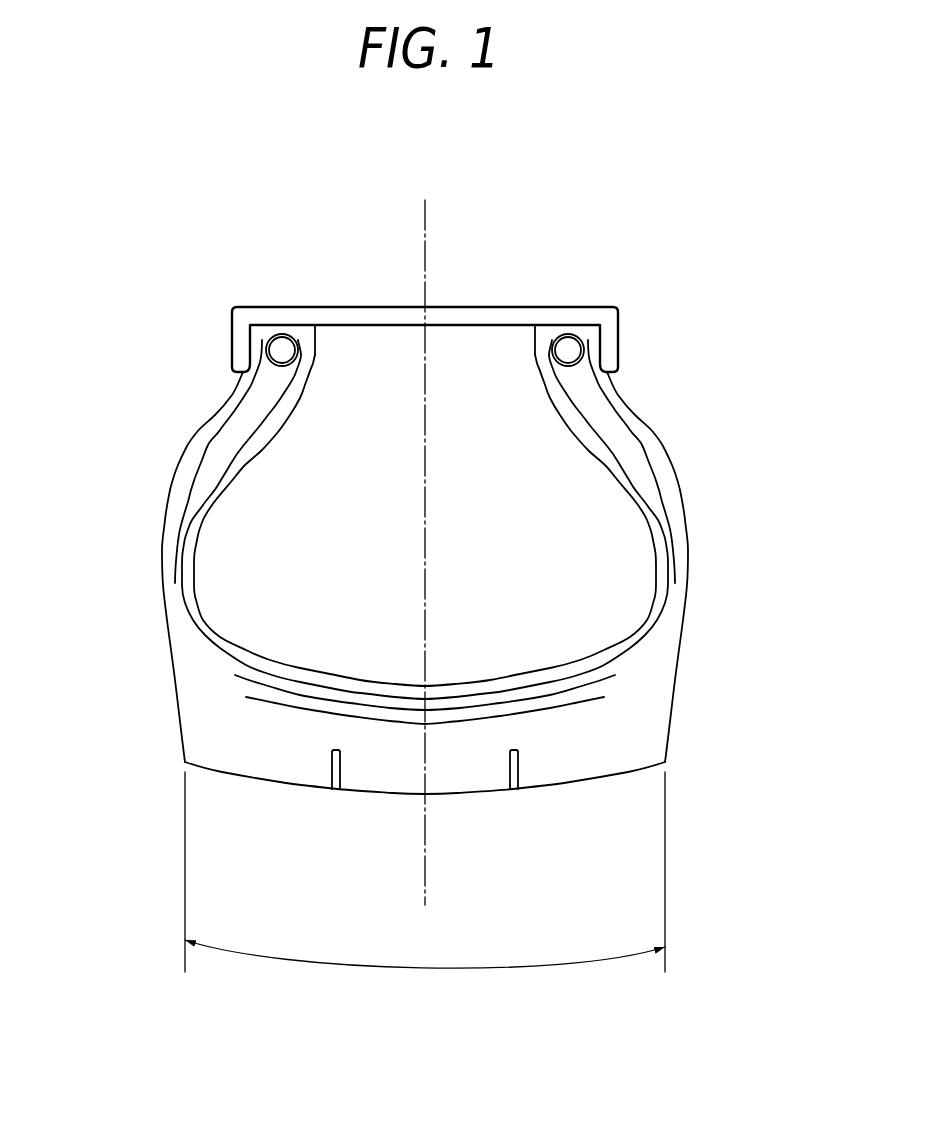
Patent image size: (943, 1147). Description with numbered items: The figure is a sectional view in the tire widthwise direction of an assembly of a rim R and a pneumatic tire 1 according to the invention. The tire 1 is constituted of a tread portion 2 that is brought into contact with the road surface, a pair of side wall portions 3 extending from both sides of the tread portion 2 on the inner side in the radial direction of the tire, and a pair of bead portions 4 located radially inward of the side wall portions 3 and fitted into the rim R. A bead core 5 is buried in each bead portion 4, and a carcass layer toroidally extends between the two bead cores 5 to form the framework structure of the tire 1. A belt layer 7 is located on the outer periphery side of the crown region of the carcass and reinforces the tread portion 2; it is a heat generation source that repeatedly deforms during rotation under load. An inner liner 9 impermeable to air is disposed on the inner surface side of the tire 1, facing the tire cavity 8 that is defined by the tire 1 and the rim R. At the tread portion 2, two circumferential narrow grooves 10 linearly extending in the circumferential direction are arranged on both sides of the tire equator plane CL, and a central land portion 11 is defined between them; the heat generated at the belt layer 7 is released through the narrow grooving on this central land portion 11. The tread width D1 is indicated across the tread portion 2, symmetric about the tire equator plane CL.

The tire 1 is at (406, 550).
The tread portion 2 is at (222, 773).
The side wall portion 3 is at (152, 505).
The bead portion 4 is at (222, 381).
The bead core 5 is at (282, 344).
The belt layer 7 is at (604, 698).
The tire cavity 8 is at (323, 470).
The inner liner 9 is at (536, 347).
The circumferential narrow groove 10 is at (334, 790).
The central land portion 11 is at (393, 794).
The rim R is at (619, 347).
The tire equator plane CL is at (422, 534).
The tread width D1 is at (425, 885).